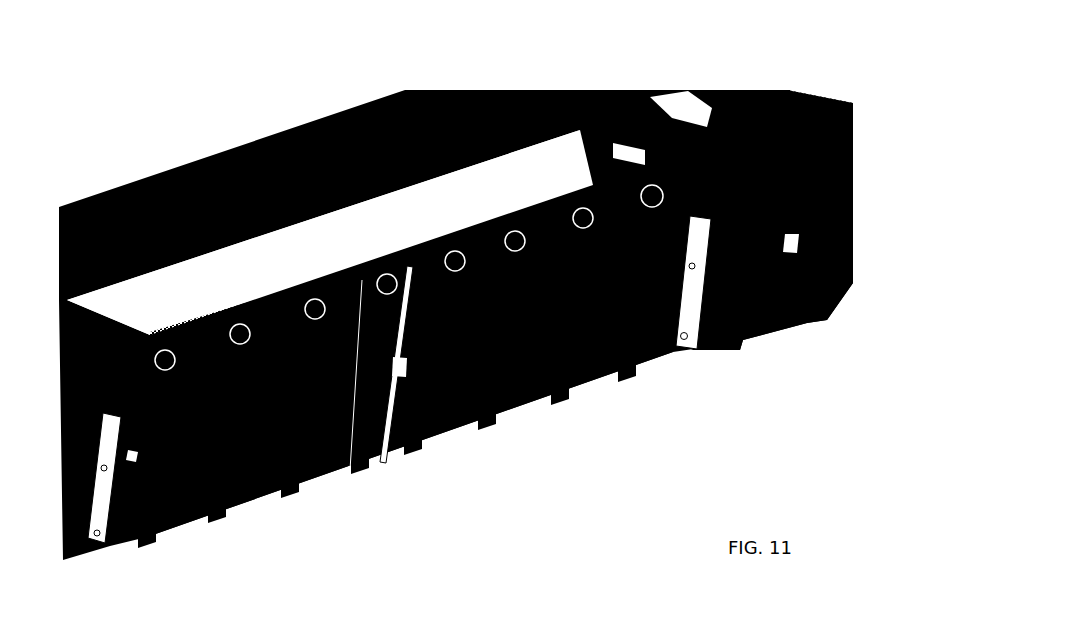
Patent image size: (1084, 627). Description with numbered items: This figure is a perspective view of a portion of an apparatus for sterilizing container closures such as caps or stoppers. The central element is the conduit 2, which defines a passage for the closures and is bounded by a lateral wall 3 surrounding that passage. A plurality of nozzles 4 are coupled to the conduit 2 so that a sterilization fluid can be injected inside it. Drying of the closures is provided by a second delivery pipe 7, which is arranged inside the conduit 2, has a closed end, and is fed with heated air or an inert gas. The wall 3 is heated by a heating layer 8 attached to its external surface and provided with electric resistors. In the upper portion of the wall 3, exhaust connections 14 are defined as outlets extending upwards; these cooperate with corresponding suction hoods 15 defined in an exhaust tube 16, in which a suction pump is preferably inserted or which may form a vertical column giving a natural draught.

The conduit 2 is at (246, 518).
The wall 3 is at (463, 433).
The nozzles 4 is at (291, 493).
The second delivery pipe 7 is at (576, 322).
The heating layer 8 is at (343, 393).
The exhaust connections 14 is at (787, 328).
The suction hoods 15 is at (746, 90).
The exhaust tube 16 is at (187, 164).